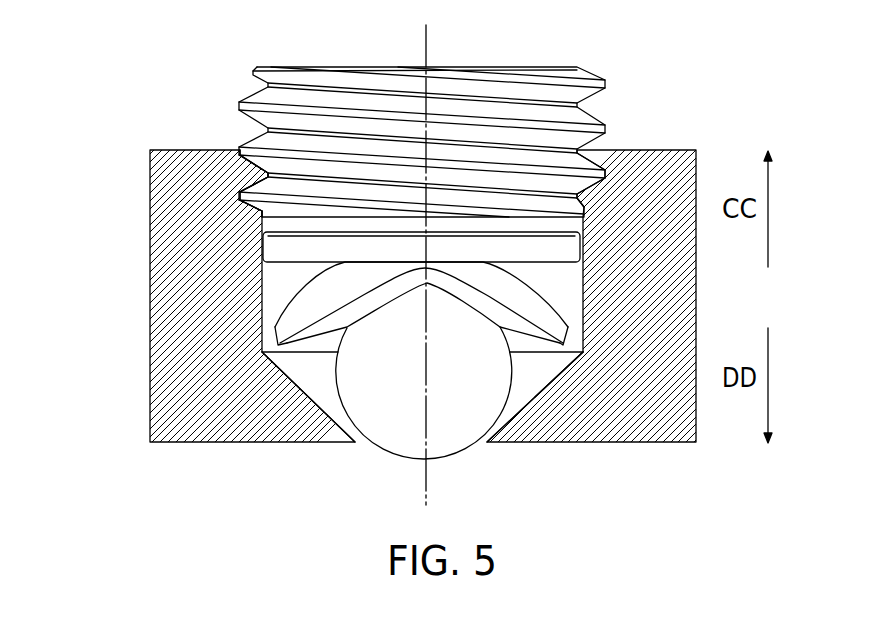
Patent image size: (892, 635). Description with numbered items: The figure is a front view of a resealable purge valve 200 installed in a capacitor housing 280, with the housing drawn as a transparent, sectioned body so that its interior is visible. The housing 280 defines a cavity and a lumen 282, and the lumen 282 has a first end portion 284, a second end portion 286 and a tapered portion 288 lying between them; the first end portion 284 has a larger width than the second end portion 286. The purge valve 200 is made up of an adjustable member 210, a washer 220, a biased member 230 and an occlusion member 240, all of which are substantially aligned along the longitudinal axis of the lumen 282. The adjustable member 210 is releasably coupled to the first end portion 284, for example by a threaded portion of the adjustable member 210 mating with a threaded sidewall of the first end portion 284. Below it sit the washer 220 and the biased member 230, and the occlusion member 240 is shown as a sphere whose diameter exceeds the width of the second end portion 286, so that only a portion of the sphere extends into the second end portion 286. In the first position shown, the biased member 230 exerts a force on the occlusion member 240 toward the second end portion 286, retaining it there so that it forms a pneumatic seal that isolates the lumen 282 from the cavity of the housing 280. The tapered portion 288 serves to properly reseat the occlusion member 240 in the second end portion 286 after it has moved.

The purge valve 200 is at (245, 57).
The adjustable member 210 is at (543, 98).
The washer 220 is at (273, 247).
The biased member 230 is at (337, 285).
The occlusion member 240 is at (350, 373).
The capacitor housing 280 is at (180, 368).
The lumen 282 is at (527, 365).
The first end portion 284 is at (258, 173).
The second end portion 286 is at (360, 442).
The tapered portion 288 is at (512, 407).